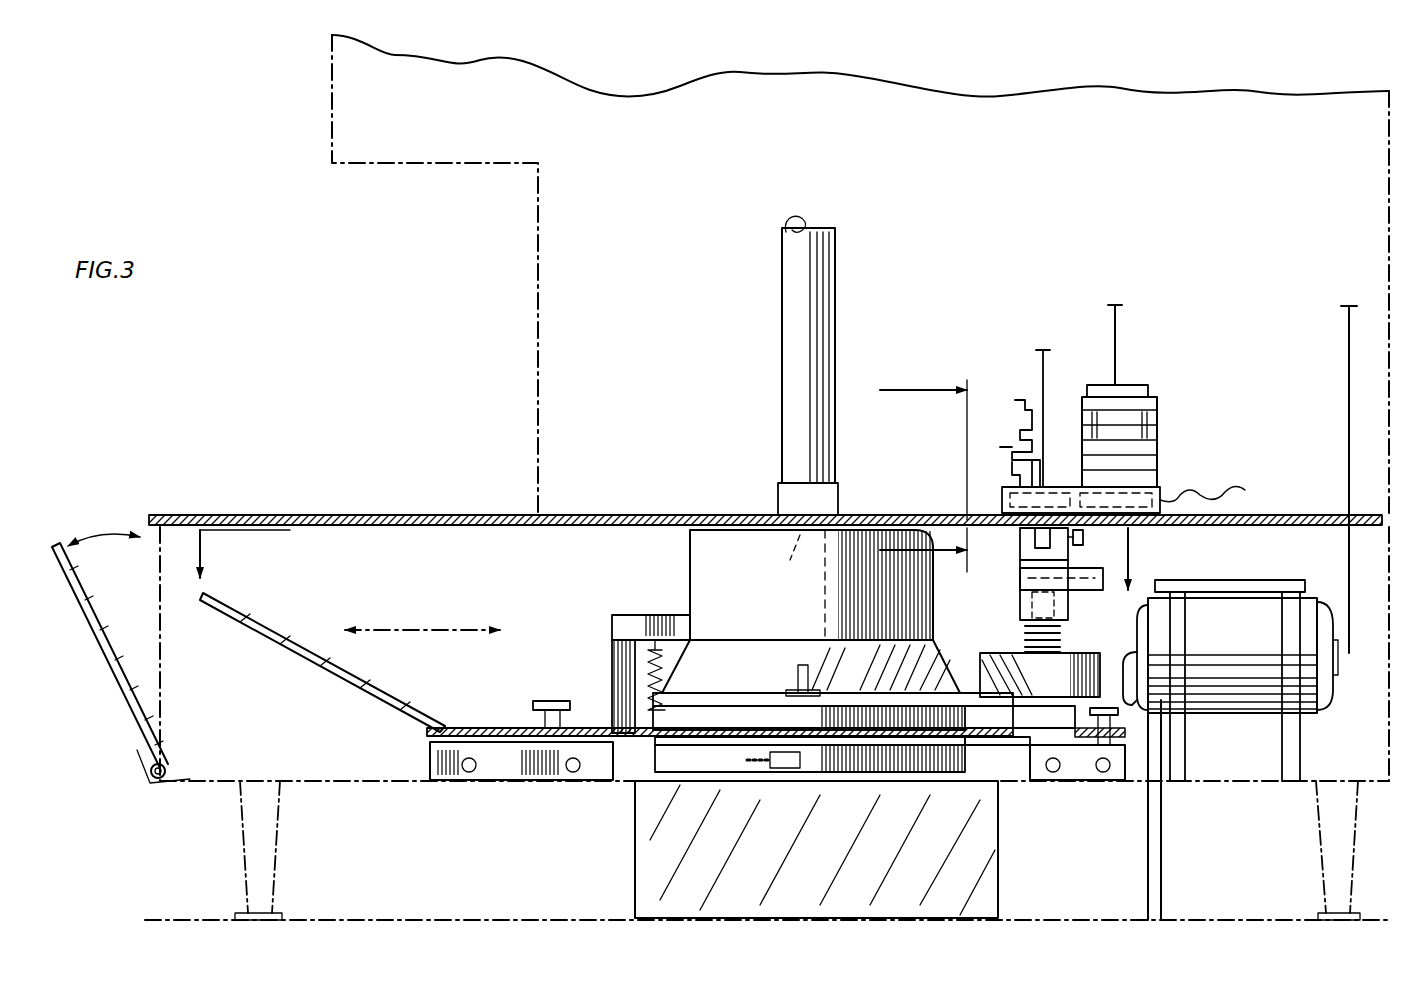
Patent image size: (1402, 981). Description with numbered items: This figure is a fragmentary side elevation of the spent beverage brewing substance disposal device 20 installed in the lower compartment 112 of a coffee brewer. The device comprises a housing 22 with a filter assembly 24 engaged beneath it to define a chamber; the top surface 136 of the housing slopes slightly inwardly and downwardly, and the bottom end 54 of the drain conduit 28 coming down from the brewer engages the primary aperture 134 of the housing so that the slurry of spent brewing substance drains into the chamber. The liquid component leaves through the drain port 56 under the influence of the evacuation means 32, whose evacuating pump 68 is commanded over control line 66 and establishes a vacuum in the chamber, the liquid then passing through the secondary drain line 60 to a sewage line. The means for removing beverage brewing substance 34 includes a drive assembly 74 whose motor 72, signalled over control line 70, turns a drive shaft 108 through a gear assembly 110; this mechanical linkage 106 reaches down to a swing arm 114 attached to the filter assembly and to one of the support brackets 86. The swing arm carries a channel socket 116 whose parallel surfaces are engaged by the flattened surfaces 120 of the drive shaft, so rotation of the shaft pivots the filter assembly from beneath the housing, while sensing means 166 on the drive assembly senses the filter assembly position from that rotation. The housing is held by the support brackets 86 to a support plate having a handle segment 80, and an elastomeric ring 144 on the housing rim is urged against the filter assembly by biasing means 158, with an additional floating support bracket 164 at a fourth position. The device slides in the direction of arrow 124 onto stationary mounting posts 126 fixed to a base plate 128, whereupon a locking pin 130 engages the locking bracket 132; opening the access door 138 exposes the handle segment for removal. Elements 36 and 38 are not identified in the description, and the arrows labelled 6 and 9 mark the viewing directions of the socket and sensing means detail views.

The spent beverage brewing substance disposal device 20 is at (560, 555).
The housing 22 is at (690, 573).
The filter assembly 24 is at (903, 773).
The drain conduit 28 is at (797, 330).
The evacuation means 32 is at (1240, 492).
The means for removing beverage brewing substance 34 is at (980, 378).
The base plate 36 is at (675, 765).
The support stand 38 is at (640, 862).
The bottom end of the drain conduit 54 is at (810, 535).
The drain port 56 is at (782, 770).
The secondary drain line 60 is at (1160, 855).
The control line 66 is at (1347, 410).
The evacuating pump 68 is at (1245, 612).
The control line 70 is at (1118, 315).
The motor 72 is at (1158, 440).
The drive assembly 74 is at (1102, 345).
The handle segment 80 is at (300, 668).
The support brackets 86 is at (1085, 652).
The mechanical linkage 106 is at (1118, 588).
The drive shaft 108 is at (1040, 537).
The gear assembly 110 is at (1002, 502).
The lower compartment 112 is at (375, 545).
The swing arm 114 is at (1030, 742).
The channel socket 116 is at (1080, 598).
The flattened surfaces 120 is at (1022, 568).
The arrow 124 is at (395, 628).
The mounting posts 126 is at (1118, 782).
The base plate 128 is at (1235, 772).
The locking pin 130 is at (535, 705).
The locking bracket 132 is at (528, 745).
The primary aperture 134 is at (770, 535).
The top surface 136 is at (740, 545).
The access door 138 is at (95, 650).
The ring 144 is at (640, 738).
The biasing means 158 is at (640, 668).
The floating support bracket 164 is at (795, 685).
The sensing means 166 is at (1000, 410).
The section line 6- 6 is at (675, 559).
The section line 9- 9 is at (923, 472).